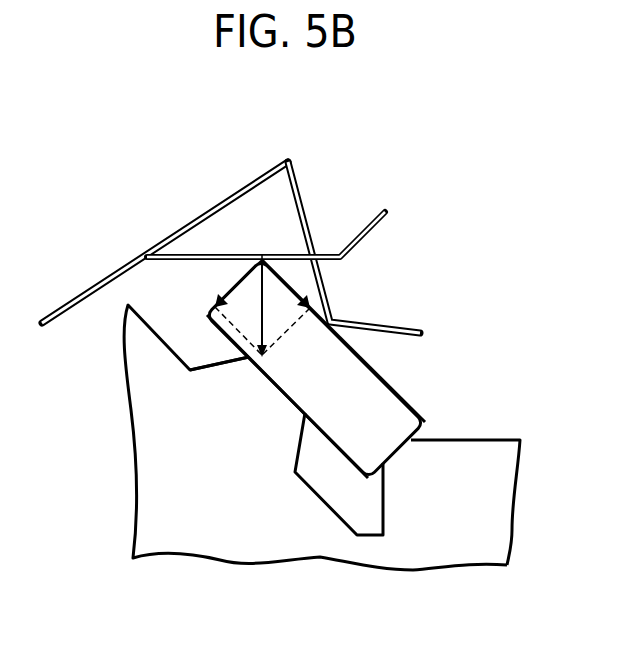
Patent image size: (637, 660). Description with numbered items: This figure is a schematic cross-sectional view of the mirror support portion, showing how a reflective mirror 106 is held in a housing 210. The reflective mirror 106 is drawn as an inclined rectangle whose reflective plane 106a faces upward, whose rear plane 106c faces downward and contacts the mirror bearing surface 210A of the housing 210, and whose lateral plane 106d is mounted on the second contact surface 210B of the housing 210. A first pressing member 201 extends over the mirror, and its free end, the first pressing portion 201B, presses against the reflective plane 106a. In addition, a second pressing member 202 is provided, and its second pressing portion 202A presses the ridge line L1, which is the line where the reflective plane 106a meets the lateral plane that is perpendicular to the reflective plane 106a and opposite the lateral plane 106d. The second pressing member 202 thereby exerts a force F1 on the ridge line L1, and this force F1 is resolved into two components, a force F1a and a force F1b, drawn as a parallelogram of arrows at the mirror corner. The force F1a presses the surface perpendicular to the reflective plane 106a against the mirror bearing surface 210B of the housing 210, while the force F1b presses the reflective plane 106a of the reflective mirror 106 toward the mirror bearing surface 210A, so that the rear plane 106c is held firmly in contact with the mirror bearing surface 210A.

The first pressing member 201 is at (96, 282).
The first pressing portion 201B is at (307, 190).
The second pressing member 202 is at (193, 250).
The second pressing portion 202A is at (225, 253).
The reflective mirror 106 is at (424, 393).
The reflective plane 106a is at (407, 368).
The rear plane 106c is at (335, 447).
The lateral plane 106d is at (428, 440).
The housing 210 is at (123, 395).
The mirror bearing surface 210A is at (281, 386).
The second contact surface 210B is at (383, 452).
The ridge line L1 is at (262, 255).
The force F1 is at (264, 307).
The force F1a is at (297, 287).
The force F1b is at (232, 288).